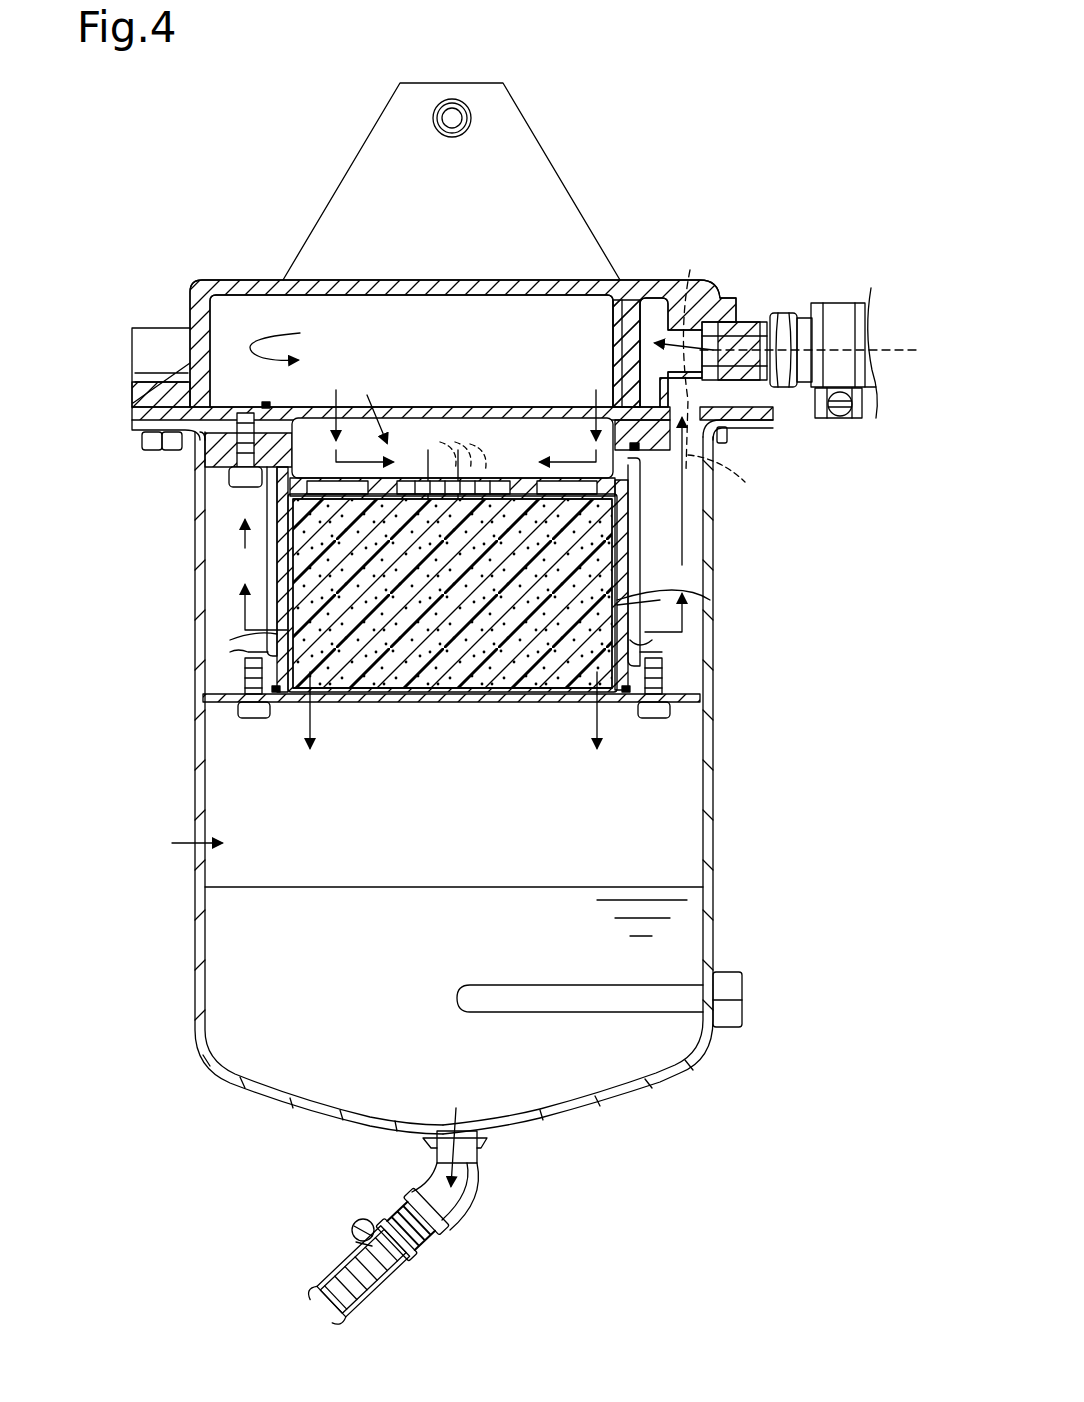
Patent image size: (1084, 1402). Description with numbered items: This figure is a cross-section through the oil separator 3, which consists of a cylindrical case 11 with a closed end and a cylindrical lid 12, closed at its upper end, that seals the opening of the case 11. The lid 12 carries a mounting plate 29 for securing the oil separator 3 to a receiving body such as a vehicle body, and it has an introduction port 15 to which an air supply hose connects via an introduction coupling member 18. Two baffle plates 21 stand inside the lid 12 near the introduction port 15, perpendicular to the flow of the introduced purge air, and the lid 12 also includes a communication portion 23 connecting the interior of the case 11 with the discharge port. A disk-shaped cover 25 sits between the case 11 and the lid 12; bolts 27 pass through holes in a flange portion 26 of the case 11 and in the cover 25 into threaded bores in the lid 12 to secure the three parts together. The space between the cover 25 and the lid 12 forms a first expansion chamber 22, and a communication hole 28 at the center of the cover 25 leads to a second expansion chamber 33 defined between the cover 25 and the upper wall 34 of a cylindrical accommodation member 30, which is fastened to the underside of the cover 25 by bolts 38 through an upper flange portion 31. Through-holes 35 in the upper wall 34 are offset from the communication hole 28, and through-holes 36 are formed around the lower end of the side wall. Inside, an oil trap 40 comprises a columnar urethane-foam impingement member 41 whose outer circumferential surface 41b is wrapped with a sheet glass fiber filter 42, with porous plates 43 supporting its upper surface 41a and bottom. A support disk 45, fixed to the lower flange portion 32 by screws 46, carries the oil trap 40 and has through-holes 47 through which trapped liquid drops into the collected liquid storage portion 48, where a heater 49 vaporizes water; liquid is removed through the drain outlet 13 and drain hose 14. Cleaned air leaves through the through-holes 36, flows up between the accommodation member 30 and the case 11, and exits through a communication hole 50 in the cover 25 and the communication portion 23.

The oil separator 3 is at (80, 243).
The case 11 is at (715, 832).
The lid 12 is at (190, 300).
The drain outlet 13 is at (480, 1210).
The drain hose 14 is at (392, 1296).
The introduction port 15 is at (752, 320).
The introduction coupling member 18 is at (818, 301).
The baffle plates 21 is at (636, 330).
The first expansion chamber 22 is at (438, 312).
The communication portion 23 is at (688, 354).
The cover 25 is at (416, 406).
The flange portion 26 is at (132, 424).
The bolts 27 is at (152, 450).
The communication hole 28 is at (334, 405).
The mounting plate 29 is at (547, 152).
The accommodation member 30 is at (265, 578).
The flange portion 31 is at (200, 470).
The flange portion 32 is at (203, 698).
The second expansion chamber 33 is at (367, 405).
The upper wall 34 is at (452, 448).
The through-holes 35 is at (441, 481).
The through-holes 36 is at (230, 640).
The bolts 38 is at (242, 488).
The oil trap 40 is at (775, 548).
The impingement member 41 is at (622, 575).
The upper surface 41a is at (566, 448).
The outer circumferential surface 41b is at (659, 542).
The glass fiber filter 42 is at (691, 587).
The porous plates 43 is at (520, 490).
The support disk 45 is at (446, 702).
The screws 46 is at (252, 718).
The through-holes 47 is at (453, 710).
The collected liquid storage portion 48 is at (177, 842).
The heater 49 is at (502, 984).
The communication hole 50 is at (727, 482).